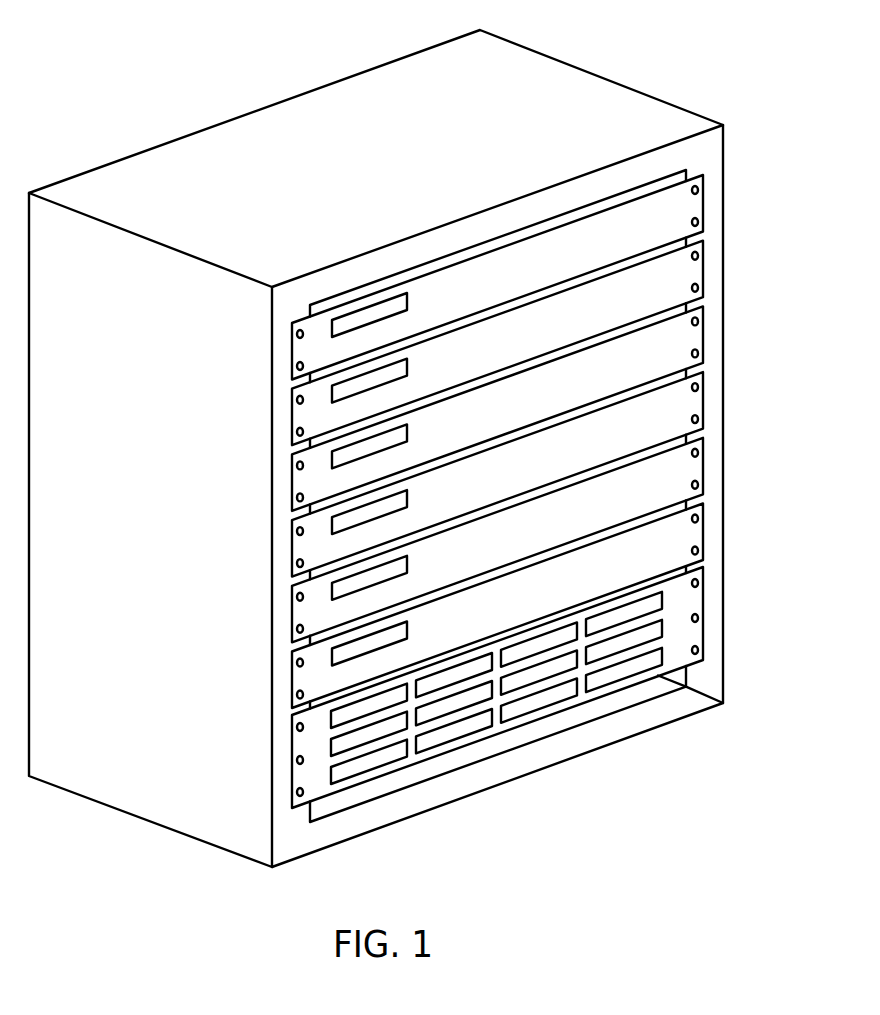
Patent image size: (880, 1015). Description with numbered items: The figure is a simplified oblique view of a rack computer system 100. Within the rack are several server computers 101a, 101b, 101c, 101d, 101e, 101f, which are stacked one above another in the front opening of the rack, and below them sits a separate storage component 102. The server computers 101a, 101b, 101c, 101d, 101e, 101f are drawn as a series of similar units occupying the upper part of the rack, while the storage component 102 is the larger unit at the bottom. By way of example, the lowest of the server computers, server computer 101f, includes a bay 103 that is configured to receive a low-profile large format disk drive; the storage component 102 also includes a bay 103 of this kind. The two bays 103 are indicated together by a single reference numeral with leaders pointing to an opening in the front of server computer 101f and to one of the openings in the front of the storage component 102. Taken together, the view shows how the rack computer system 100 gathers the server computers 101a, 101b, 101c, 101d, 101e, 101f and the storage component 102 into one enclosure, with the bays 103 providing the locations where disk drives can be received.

The rack computer system 100 is at (137, 66).
The server computer 101a is at (694, 213).
The server computer 101b is at (545, 342).
The server computer 101c is at (544, 407).
The server computer 101d is at (545, 472).
The server computer 101e is at (545, 539).
The server computer 101f is at (543, 605).
The storage component 102 is at (687, 613).
The bay 103 is at (343, 717).